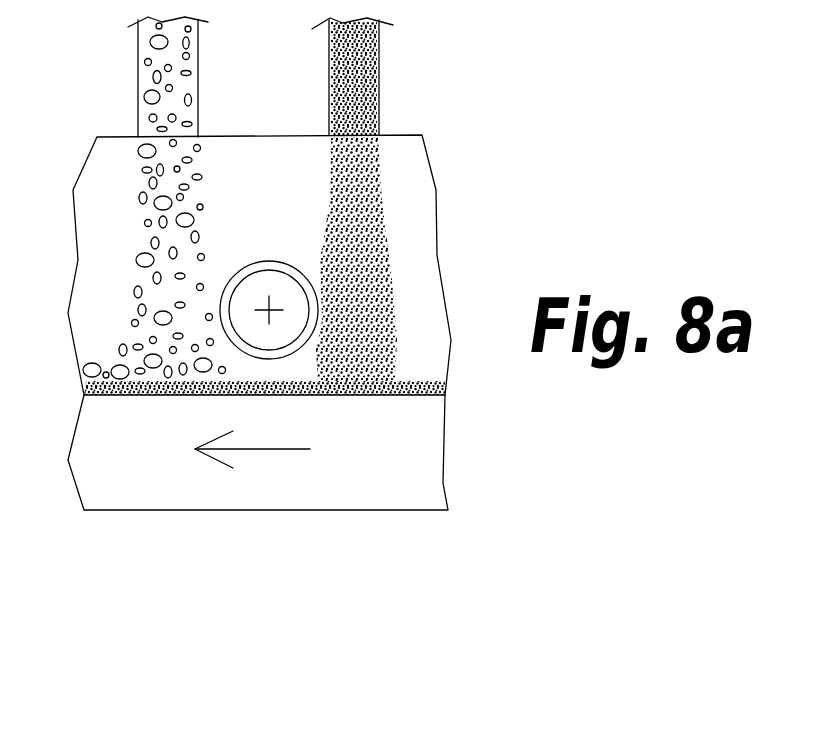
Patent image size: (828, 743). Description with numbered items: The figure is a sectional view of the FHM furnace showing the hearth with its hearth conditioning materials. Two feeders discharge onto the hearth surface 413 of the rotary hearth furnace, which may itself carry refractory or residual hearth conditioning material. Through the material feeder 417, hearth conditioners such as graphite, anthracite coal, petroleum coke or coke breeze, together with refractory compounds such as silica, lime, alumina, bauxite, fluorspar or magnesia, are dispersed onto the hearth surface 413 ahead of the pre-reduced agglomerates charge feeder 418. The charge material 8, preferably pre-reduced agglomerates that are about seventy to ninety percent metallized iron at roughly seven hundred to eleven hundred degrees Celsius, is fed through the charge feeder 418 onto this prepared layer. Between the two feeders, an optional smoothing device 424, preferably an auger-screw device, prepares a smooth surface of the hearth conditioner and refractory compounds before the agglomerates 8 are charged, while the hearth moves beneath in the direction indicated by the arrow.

The pre-reduced agglomerates charge feeder 418 is at (138, 57).
The material feeder 417 is at (380, 47).
The charge material 8 is at (145, 263).
The hearth conditioner/refractory compounds smoothing device 424 is at (313, 333).
The hearth surface 413 is at (395, 396).